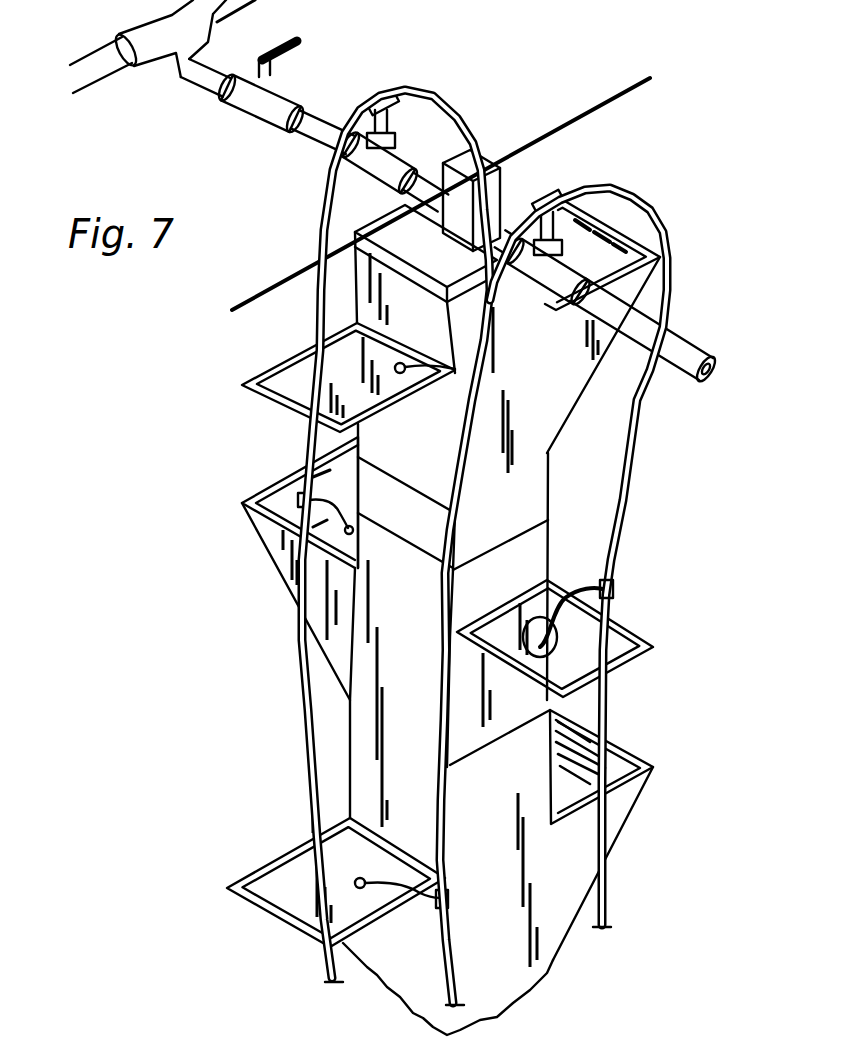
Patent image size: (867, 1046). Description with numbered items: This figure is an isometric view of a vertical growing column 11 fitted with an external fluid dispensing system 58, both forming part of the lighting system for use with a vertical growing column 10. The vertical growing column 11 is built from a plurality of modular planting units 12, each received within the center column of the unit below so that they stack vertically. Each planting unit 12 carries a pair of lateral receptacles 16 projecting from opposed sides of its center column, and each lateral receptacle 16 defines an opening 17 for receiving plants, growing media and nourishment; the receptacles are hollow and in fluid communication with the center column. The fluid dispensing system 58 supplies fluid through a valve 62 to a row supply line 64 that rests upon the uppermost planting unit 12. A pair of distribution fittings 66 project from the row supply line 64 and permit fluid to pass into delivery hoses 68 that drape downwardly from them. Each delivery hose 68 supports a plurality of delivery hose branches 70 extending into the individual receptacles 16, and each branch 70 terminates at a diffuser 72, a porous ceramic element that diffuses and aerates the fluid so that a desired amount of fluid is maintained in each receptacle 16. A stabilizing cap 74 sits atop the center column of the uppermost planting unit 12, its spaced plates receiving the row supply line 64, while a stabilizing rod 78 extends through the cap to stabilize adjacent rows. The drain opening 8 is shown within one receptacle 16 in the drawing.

The drain opening 8 is at (560, 638).
The lighting system for use with a vertical growing column 10 is at (182, 406).
The vertical growing column 11 is at (662, 450).
The modular planting unit 12 is at (250, 396).
The lateral receptacle 16 is at (282, 370).
The opening 17 is at (284, 886).
The fluid dispensing system 58 is at (665, 202).
The valve 62 is at (302, 72).
The row supply line 64 is at (697, 355).
The distribution fitting 66 is at (381, 97).
The delivery hose 68 is at (474, 547).
The delivery hose branch 70 is at (817, 1043).
The diffuser 72 is at (540, 647).
The stabilizing cap 74 is at (515, 155).
The stabilizing rod 78 is at (565, 112).